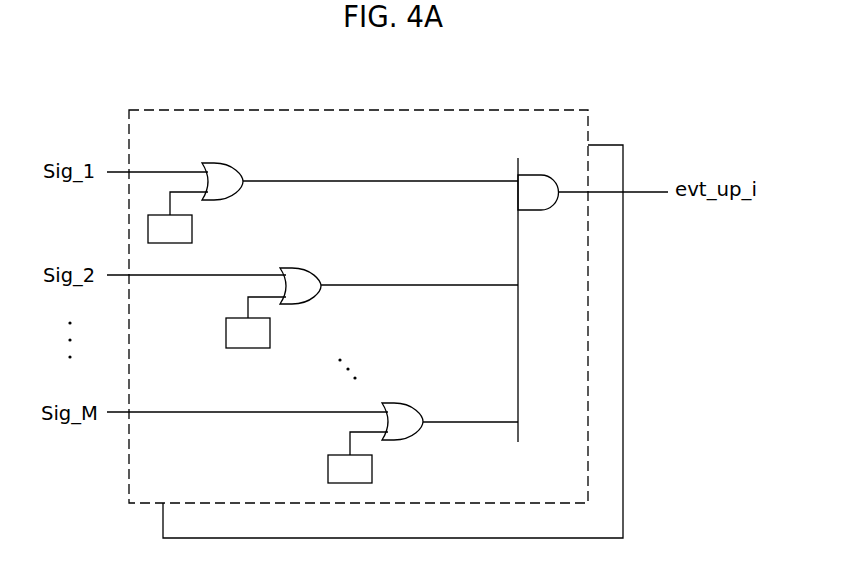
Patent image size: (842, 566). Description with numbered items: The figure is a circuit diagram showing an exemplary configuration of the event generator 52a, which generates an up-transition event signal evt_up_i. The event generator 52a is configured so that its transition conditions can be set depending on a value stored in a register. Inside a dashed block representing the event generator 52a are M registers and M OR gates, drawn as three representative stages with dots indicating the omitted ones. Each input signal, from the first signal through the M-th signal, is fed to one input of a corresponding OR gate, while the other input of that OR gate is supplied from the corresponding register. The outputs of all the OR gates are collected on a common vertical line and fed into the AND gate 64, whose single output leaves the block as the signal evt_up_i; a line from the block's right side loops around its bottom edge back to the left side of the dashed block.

The event generator 52a is at (384, 109).
The AND gate 64 is at (537, 175).